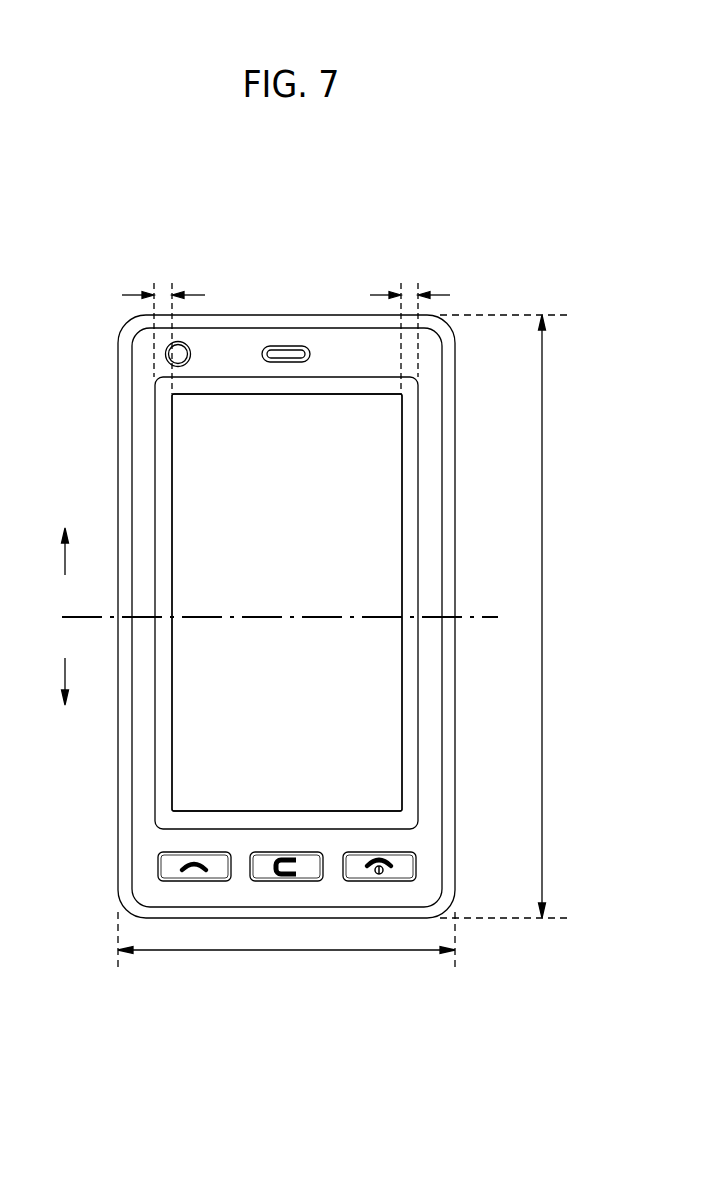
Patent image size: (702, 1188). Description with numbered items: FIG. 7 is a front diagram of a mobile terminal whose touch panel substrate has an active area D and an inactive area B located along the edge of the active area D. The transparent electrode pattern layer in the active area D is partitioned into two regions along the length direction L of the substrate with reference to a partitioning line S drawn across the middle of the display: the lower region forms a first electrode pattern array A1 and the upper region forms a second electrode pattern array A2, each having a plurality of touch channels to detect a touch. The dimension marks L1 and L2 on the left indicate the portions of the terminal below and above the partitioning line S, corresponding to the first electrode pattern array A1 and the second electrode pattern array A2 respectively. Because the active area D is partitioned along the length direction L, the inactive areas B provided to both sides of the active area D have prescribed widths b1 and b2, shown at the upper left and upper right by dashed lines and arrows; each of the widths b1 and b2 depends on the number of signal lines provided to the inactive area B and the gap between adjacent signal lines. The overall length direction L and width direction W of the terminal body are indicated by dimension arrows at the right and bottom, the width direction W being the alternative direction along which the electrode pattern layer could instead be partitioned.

The inactive area B is at (410, 438).
The active area D is at (402, 509).
The second electrode pattern array A2 is at (402, 472).
The first electrode pattern array A1 is at (402, 693).
The partitioning line S is at (291, 616).
The width of inactive area b1 is at (163, 327).
The width of inactive area b2 is at (410, 327).
The length direction L is at (505, 616).
The width direction W is at (286, 942).
The lower length from center line L1 is at (81, 681).
The upper length from center line L2 is at (81, 551).